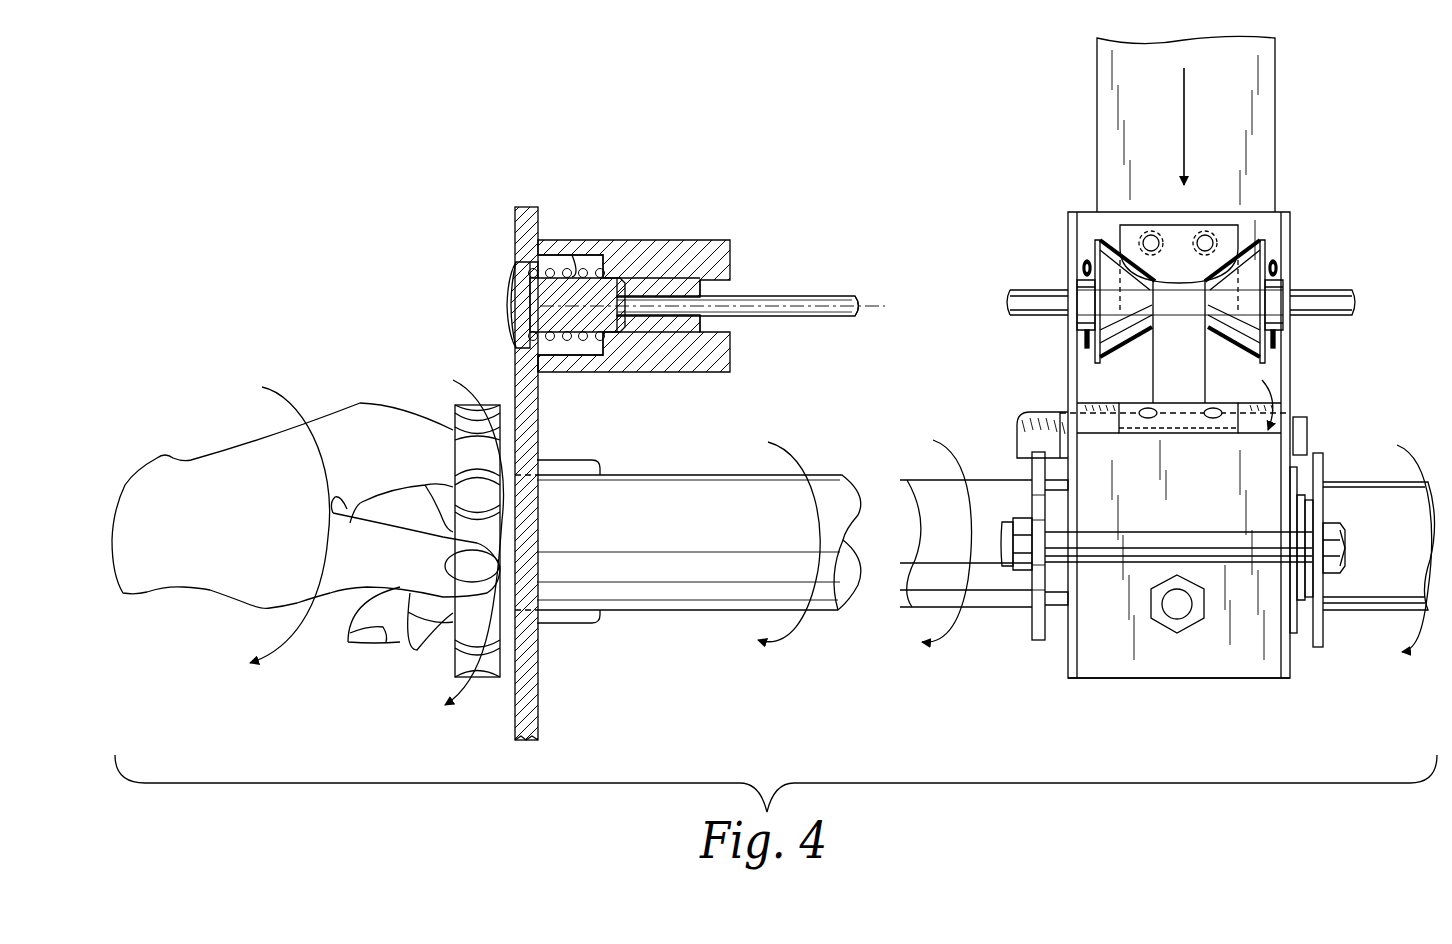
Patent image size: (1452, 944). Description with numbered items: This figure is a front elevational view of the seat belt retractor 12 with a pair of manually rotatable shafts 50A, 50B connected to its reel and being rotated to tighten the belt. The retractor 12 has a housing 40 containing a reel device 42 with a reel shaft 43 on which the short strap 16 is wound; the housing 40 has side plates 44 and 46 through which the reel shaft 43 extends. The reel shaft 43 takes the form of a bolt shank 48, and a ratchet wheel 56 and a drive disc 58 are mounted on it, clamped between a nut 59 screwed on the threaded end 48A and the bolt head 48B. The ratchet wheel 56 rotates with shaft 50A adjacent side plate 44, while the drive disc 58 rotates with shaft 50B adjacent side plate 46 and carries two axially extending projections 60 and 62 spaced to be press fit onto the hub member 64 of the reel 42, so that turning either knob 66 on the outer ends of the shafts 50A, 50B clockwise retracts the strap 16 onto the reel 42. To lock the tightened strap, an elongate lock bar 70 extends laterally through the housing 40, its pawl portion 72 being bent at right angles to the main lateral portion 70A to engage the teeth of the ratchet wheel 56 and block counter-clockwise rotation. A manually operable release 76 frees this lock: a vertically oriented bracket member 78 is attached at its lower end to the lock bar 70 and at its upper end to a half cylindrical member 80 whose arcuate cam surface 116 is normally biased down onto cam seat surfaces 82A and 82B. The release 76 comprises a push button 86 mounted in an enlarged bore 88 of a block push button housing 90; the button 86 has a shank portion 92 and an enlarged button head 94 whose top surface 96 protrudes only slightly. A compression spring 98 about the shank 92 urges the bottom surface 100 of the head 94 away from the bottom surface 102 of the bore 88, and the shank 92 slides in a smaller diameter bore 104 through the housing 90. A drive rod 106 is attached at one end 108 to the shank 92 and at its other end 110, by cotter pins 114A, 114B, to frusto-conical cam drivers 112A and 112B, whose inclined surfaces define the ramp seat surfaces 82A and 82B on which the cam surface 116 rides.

The retractor 12 is at (1298, 682).
The short strap 16 is at (1114, 112).
The housing 40 is at (1117, 680).
The reel device 42 is at (1250, 402).
The reel shaft 43 is at (1286, 496).
The side plate 44 is at (1068, 678).
The side plate 46 is at (1296, 668).
The bolt shank 48 is at (1219, 565).
The threaded end 48A is at (1017, 518).
The bolt head 48B is at (1338, 534).
The manually rotatable shaft 50A is at (666, 612).
The manually rotatable shaft 50B is at (1398, 458).
The ratchet wheel 56 is at (1030, 640).
The drive disc 58 is at (1318, 466).
The nut 59 is at (1008, 514).
The projection 60 is at (1306, 504).
The projection 62 is at (1319, 594).
The hub member 64 is at (1336, 550).
The knob 66 is at (450, 656).
The elongate lock bar 70 is at (1092, 390).
The main lateral portion 70A is at (1030, 420).
The pawl portion 72 is at (1018, 412).
The manually operable release 76 is at (502, 216).
The bracket member 78 is at (1148, 390).
The half cylindrical member 80 is at (1143, 232).
The cam seat surface 82A is at (1120, 234).
The cam seat surface 82B is at (1238, 236).
The push button 86 is at (516, 317).
The enlarged bore 88 is at (571, 261).
The block push button housing 90 is at (659, 240).
The shank portion 92 is at (609, 297).
The button head 94 is at (520, 277).
The top surface 96 is at (516, 303).
The compression spring 98 is at (549, 267).
The bottom surface 100 is at (548, 262).
The bottom surface 102 is at (550, 350).
The smaller diameter bore 104 is at (724, 294).
The drive rod 106 is at (826, 316).
The end 108 is at (684, 264).
The end 110 is at (1080, 276).
The cam driver 112A is at (1095, 250).
The cam driver 112B is at (1264, 238).
The cotter pin 114A is at (1084, 338).
The cotter pin 114B is at (1276, 344).
The arcuate cam surface 116 is at (1182, 284).